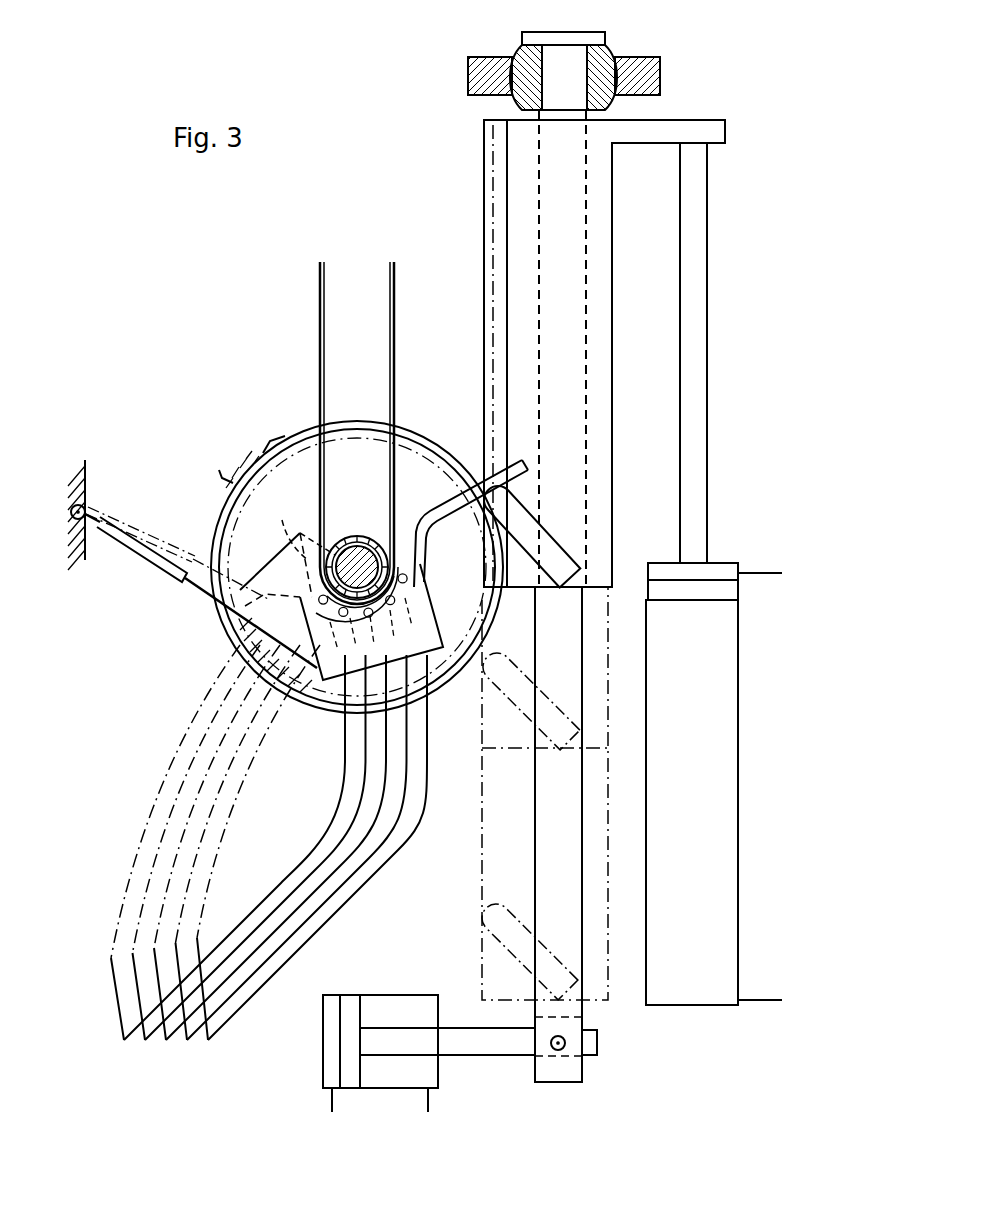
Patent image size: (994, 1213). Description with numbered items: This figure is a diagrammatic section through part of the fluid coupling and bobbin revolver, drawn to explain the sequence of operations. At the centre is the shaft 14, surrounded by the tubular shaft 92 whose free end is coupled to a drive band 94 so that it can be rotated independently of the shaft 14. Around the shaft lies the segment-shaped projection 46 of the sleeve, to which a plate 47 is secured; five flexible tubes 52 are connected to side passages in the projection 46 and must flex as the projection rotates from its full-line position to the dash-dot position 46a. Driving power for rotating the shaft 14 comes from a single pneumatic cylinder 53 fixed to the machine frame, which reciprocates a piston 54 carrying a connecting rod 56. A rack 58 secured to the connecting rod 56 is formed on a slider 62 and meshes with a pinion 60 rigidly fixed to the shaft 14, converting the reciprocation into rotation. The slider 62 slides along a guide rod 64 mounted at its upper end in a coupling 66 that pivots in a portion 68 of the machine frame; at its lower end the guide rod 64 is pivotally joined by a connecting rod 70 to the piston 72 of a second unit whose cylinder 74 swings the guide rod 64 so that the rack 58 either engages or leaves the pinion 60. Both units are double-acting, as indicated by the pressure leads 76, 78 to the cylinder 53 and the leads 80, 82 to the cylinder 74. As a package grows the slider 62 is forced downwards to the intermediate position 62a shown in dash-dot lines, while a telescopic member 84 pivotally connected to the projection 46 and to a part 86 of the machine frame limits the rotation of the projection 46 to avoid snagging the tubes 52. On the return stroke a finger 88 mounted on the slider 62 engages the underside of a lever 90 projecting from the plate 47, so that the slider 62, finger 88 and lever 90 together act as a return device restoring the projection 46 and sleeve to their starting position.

The shaft 14 is at (358, 537).
The projection 46 is at (290, 560).
The projection position 46a is at (294, 527).
The plate 47 is at (420, 580).
The flexible tubes 52 is at (215, 1049).
The pneumatic cylinder 53 is at (722, 752).
The piston 54 is at (727, 592).
The connecting rod 56 is at (700, 298).
The rack 58 is at (494, 150).
The pinion 60 is at (278, 497).
The slider 62 is at (604, 225).
The slider intermediate position 62a is at (510, 748).
The guide rod 64 is at (535, 878).
The coupling 66 is at (608, 46).
The machine frame portion 68 is at (652, 90).
The connecting rod 70 is at (496, 1045).
The piston 72 is at (346, 1005).
The cylinder 74 is at (393, 1007).
The pressure lead 76 is at (760, 570).
The pressure lead 78 is at (760, 978).
The pressure lead 80 is at (328, 1116).
The pressure lead 82 is at (426, 1116).
The telescopic member 84 is at (138, 562).
The machine frame part 86 is at (87, 486).
The finger 88 is at (546, 547).
The lever 90 is at (480, 462).
The tubular shaft 92 is at (340, 538).
The drive band 94 is at (322, 284).